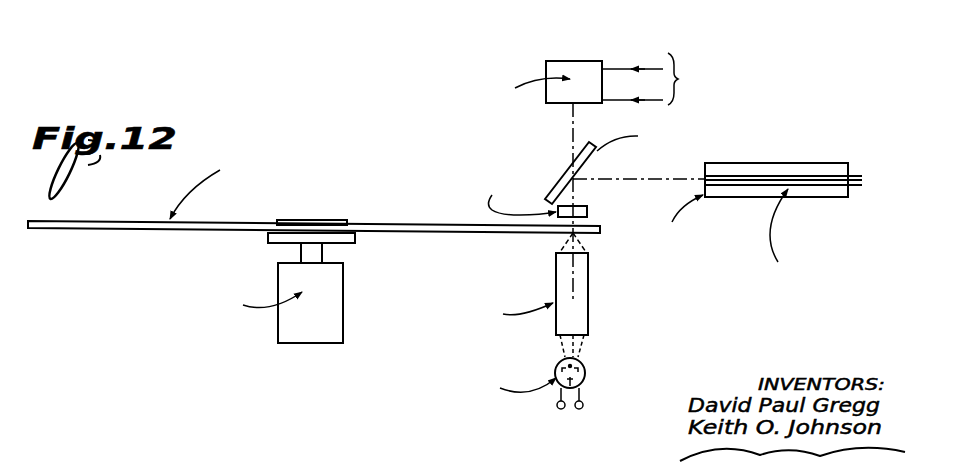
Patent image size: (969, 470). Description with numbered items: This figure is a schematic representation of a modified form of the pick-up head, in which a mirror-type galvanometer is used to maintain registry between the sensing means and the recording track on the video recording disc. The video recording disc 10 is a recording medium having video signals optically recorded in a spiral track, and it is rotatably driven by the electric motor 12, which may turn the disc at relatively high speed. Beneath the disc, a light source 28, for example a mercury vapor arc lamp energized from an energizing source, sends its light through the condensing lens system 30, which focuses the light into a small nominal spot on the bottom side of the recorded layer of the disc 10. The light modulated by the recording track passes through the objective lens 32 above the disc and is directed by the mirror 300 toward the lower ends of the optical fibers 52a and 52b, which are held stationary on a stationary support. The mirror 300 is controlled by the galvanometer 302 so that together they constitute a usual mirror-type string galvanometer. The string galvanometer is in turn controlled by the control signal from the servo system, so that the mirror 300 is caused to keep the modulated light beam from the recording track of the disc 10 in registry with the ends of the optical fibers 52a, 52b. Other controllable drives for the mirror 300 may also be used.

The video recording disc 10 is at (150, 229).
The electric motor 12 is at (318, 328).
The light source 28 is at (585, 373).
The condensing lens system 30 is at (589, 304).
The objective lens 32 is at (589, 213).
The mirror 300 is at (587, 139).
The galvanometer 302 is at (573, 61).
The optical fiber 52a is at (735, 175).
The optical fiber 52b is at (765, 210).